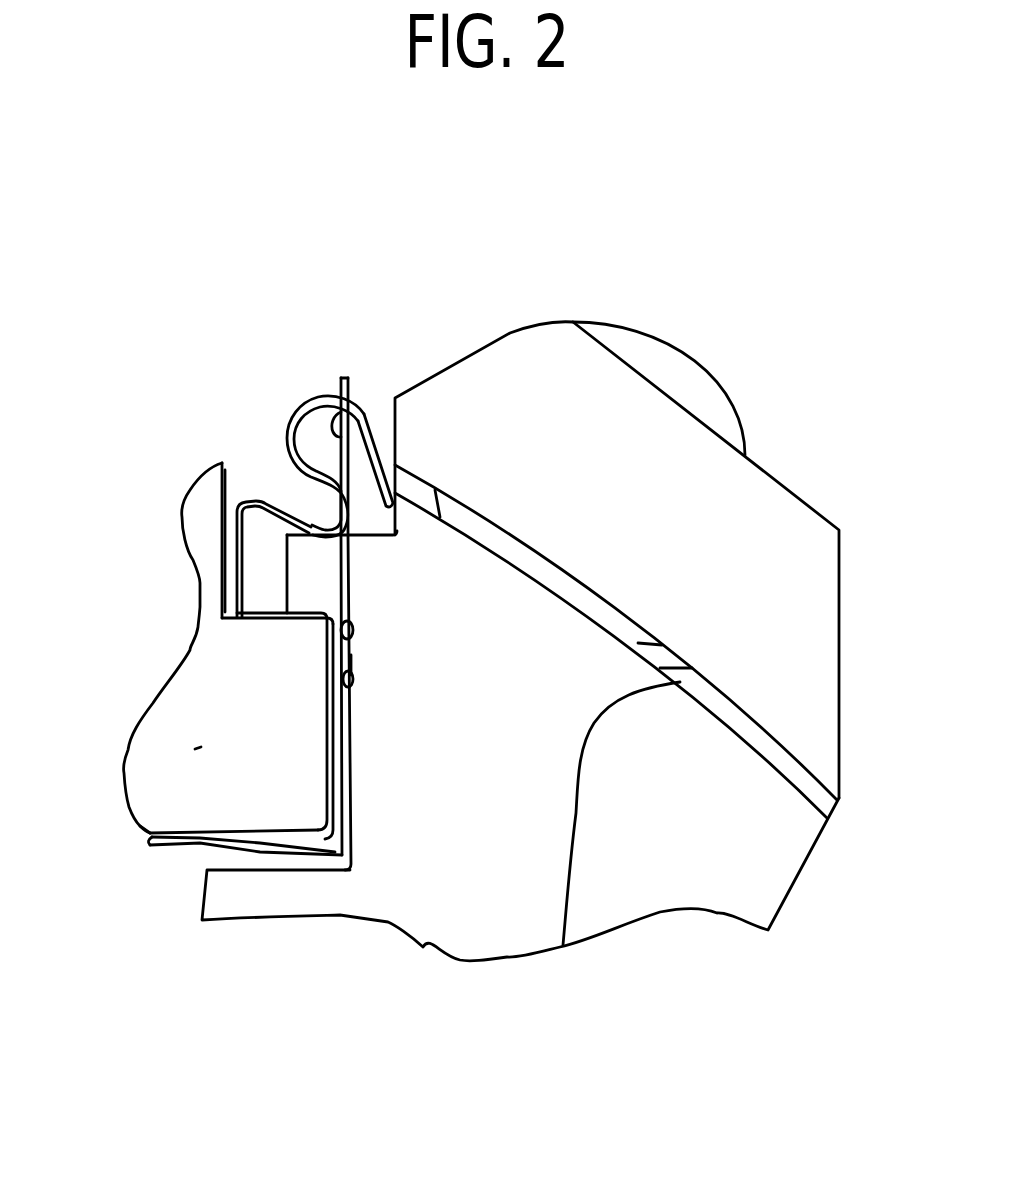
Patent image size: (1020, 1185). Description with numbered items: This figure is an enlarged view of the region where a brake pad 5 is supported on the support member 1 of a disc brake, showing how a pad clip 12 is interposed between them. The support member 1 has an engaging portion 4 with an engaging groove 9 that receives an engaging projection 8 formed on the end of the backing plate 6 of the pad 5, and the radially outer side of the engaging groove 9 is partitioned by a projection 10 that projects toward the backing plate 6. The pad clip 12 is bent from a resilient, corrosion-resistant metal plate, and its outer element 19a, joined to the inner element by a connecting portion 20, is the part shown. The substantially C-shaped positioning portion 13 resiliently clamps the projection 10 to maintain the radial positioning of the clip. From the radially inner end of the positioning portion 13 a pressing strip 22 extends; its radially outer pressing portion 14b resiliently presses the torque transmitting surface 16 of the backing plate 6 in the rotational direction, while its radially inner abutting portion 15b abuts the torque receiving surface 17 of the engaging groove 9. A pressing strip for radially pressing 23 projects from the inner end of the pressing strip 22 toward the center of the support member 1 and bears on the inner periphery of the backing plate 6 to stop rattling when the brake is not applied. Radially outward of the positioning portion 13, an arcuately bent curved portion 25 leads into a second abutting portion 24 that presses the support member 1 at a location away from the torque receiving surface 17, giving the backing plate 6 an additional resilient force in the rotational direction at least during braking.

The support member 1 is at (763, 571).
The engaging portion 4 is at (510, 803).
The pad 5 is at (213, 792).
The backing plate 6 is at (155, 812).
The engaging projection 8 is at (201, 747).
The engaging groove 9 is at (352, 620).
The projection 10 is at (325, 578).
The pad clip 12 is at (286, 336).
The positioning portion 13 is at (235, 535).
The pressing portion 14b is at (340, 640).
The abutting portion 15b is at (352, 838).
The torque transmitting surface 16 is at (345, 768).
The torque receiving surface 17 is at (352, 668).
The outer element 19a is at (231, 576).
The connecting portion 20 is at (345, 378).
The pressing strip 22 is at (343, 678).
The pressing strip for radially pressing 23 is at (183, 842).
The second abutting portion 24 is at (372, 410).
The curved portion 25 is at (287, 428).